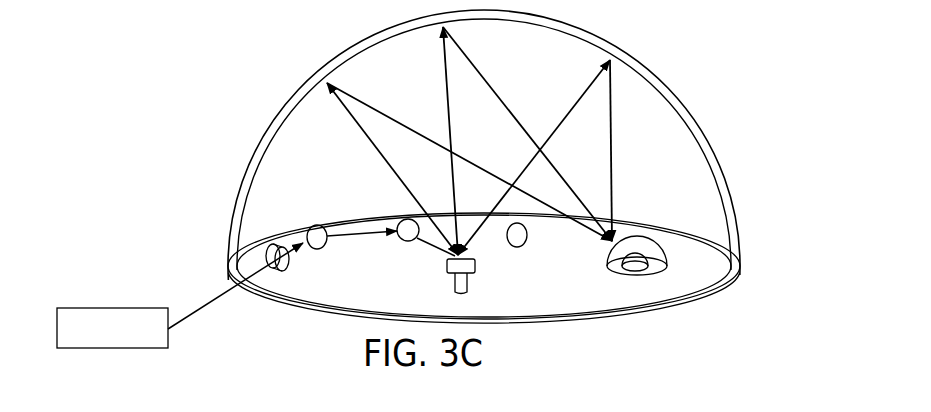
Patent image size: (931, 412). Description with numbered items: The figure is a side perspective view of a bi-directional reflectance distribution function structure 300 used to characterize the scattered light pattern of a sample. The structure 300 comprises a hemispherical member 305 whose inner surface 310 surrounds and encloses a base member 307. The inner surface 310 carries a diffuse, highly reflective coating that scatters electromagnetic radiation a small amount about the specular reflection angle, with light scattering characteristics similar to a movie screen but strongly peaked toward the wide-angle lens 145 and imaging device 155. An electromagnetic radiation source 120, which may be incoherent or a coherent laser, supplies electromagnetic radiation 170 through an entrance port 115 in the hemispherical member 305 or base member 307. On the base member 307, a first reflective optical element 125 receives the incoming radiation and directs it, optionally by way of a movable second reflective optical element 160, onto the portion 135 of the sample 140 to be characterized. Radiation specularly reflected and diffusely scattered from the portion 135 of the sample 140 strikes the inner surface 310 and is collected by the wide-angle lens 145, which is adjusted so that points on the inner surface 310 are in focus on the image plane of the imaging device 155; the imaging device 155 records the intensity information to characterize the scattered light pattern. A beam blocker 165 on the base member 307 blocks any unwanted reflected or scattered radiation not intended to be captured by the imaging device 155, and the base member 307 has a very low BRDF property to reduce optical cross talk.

The bi-directional reflectance distribution function structure 300 is at (183, 126).
The hemispherical member 305 is at (681, 102).
The inner surface 310 is at (686, 128).
The base member 307 is at (650, 317).
The entrance port 115 is at (268, 250).
The electromagnetic radiation source 120 is at (112, 328).
The first reflective optical element 125 is at (315, 226).
The portion of sample 135 is at (438, 273).
The sample 140 is at (478, 267).
The wide-angle lens 145 is at (648, 240).
The imaging device 155 is at (650, 258).
The second reflective optical element 160 is at (404, 219).
The beam blocker 165 is at (527, 241).
The electromagnetic radiation 170 is at (190, 318).